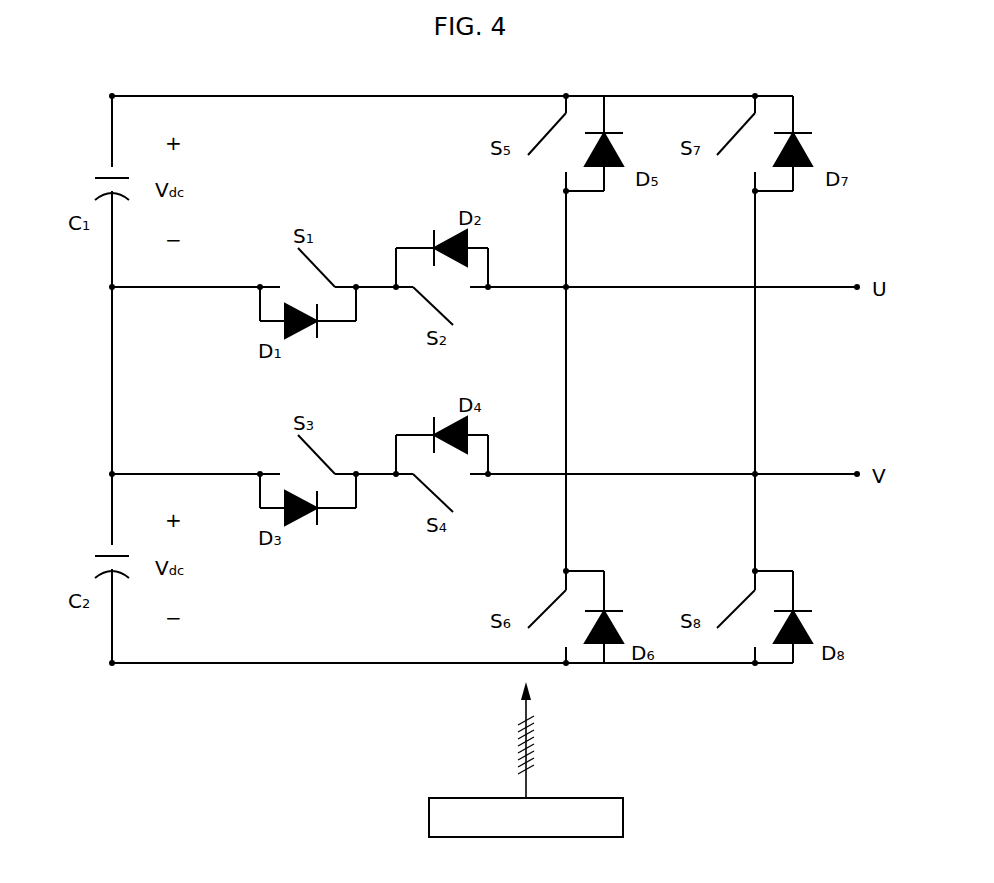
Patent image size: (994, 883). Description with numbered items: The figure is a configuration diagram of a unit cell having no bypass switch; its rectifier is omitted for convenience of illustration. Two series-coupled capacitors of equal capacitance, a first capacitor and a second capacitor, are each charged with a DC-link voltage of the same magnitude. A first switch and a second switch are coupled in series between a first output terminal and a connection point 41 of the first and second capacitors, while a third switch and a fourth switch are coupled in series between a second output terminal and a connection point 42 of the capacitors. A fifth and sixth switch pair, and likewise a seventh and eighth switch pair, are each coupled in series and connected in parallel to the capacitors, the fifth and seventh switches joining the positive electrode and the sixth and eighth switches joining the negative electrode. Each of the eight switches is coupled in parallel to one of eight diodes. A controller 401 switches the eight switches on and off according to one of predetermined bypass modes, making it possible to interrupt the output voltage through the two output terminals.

The connection point 41 is at (112, 287).
The connection point 42 is at (112, 474).
The controller 401 is at (526, 759).